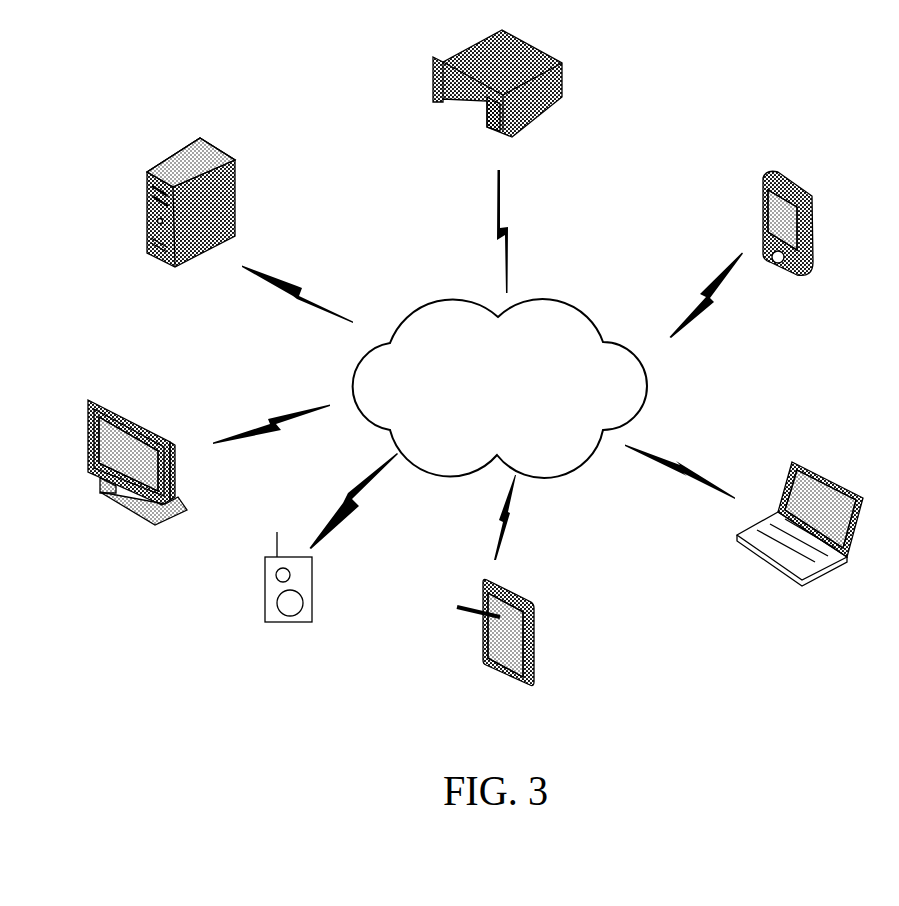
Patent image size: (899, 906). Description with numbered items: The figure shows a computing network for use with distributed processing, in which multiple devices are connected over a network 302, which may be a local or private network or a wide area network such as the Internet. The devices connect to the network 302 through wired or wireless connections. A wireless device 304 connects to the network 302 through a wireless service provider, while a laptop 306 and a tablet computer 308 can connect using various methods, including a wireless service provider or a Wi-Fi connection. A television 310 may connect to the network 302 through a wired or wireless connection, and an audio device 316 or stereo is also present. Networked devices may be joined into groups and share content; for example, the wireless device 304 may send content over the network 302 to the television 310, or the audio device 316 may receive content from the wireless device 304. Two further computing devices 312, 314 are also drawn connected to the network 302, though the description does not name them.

The network 302 is at (538, 295).
The wireless device 304 is at (815, 210).
The laptop 306 is at (807, 463).
The tablet computer 308 is at (528, 598).
The television 310 is at (138, 413).
The computer tower / server 312 is at (222, 150).
The server 314 is at (567, 57).
The audio device 316 is at (313, 577).